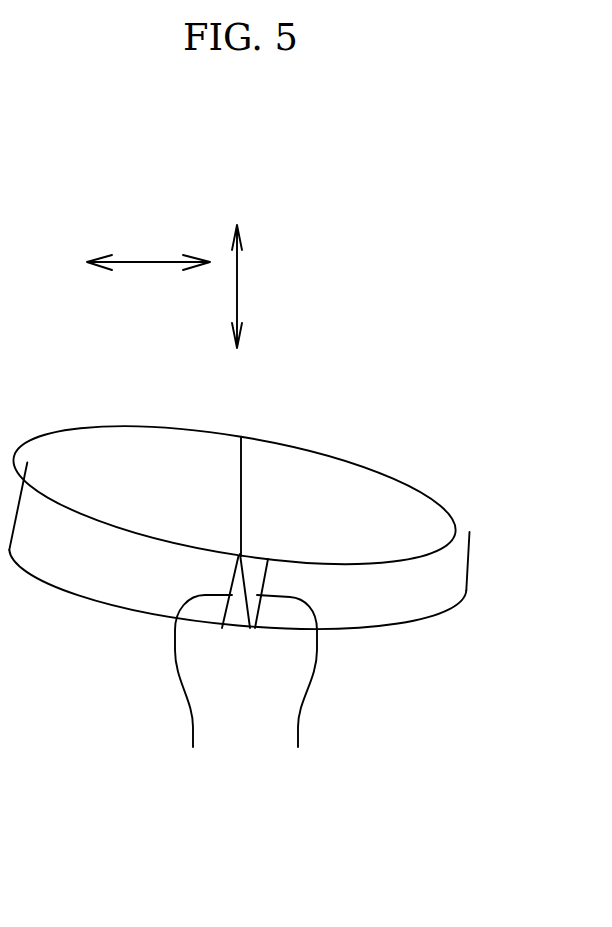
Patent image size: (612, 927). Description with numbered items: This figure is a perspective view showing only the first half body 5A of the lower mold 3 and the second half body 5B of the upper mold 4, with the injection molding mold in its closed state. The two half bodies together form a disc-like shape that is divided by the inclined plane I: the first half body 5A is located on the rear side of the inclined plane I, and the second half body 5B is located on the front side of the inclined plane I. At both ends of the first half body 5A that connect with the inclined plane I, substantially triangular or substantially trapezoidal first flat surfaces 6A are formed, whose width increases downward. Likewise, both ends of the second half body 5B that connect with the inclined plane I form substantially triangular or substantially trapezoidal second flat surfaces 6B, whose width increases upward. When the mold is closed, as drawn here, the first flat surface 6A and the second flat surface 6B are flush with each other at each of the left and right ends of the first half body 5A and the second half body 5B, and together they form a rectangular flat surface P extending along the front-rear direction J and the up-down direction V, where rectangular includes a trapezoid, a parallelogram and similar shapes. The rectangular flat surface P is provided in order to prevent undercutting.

The lower mold 3 is at (125, 431).
The upper mold 4 is at (355, 474).
The first half body 5A is at (85, 458).
The second half body 5B is at (428, 513).
The first flat surface 6A is at (203, 687).
The second flat surface 6B is at (288, 687).
The inclined plane I is at (245, 573).
The front-rear direction J is at (148, 251).
The up-down direction V is at (248, 286).
The rectangular flat surface P is at (248, 712).